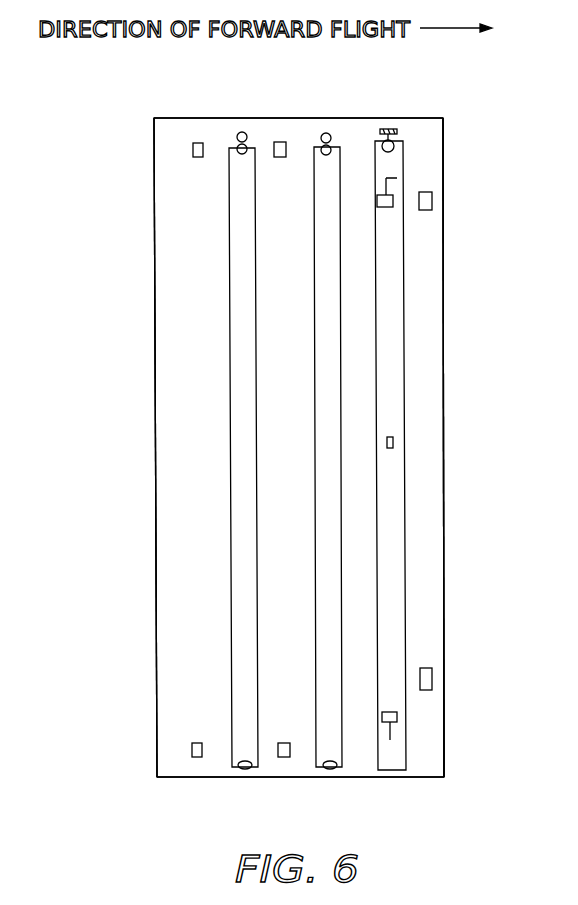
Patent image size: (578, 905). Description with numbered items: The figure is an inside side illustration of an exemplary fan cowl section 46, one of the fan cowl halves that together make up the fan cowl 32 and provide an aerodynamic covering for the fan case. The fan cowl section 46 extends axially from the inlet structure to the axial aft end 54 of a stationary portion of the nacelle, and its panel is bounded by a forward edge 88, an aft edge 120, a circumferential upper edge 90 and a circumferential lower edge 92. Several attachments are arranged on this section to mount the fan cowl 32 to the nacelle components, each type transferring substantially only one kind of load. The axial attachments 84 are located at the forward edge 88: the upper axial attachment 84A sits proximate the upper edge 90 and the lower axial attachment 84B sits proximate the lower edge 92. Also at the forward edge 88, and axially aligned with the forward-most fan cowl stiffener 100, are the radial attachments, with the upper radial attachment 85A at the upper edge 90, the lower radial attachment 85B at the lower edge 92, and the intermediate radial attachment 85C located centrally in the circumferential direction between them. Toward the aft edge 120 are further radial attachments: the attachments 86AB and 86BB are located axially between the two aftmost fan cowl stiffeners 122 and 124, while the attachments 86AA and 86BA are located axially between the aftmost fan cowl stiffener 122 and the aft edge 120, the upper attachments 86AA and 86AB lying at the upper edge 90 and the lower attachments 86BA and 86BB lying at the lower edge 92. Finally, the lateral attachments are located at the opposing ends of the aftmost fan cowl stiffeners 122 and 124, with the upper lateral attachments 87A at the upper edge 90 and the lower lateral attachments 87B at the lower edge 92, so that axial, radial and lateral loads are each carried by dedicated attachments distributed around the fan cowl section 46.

The fan cowl 32 is at (475, 125).
The fan cowl section 46 is at (443, 335).
The axial aft end 54 is at (153, 527).
The axial attachments 84 is at (443, 283).
The upper axial attachment 84A is at (438, 200).
The lower axial attachment 84B is at (438, 677).
The upper radial attachment 85A is at (403, 179).
The lower radial attachment 85B is at (403, 728).
The intermediate radial attachment 85C is at (401, 432).
The upper radial attachment 86AA is at (187, 150).
The upper radial attachment 86AB is at (283, 135).
The lower radial attachment 86BA is at (194, 764).
The lower radial attachment 86BB is at (286, 764).
The upper lateral attachments 87A is at (240, 124).
The lower lateral attachments 87B is at (242, 782).
The forward edge 88 is at (443, 283).
The upper edge 90 is at (173, 118).
The lower edge 92 is at (157, 778).
The forward-most fan cowl stiffener 100 is at (400, 548).
The aft edge 120 is at (153, 527).
The aftmost fan cowl stiffener 122 is at (233, 607).
The aftmost fan cowl stiffener 124 is at (327, 665).